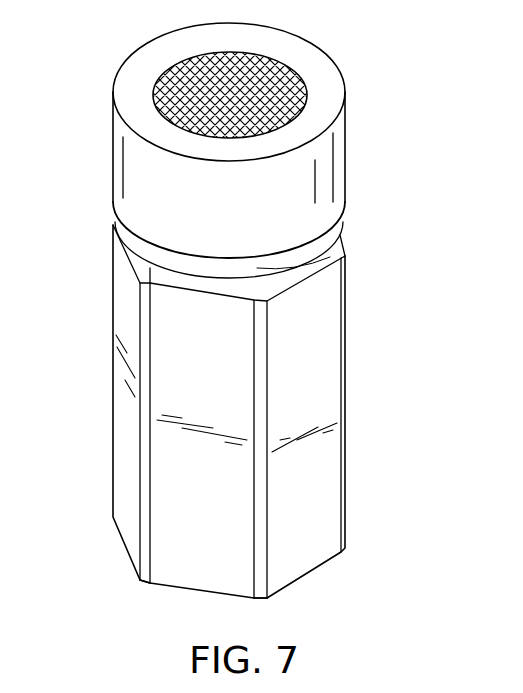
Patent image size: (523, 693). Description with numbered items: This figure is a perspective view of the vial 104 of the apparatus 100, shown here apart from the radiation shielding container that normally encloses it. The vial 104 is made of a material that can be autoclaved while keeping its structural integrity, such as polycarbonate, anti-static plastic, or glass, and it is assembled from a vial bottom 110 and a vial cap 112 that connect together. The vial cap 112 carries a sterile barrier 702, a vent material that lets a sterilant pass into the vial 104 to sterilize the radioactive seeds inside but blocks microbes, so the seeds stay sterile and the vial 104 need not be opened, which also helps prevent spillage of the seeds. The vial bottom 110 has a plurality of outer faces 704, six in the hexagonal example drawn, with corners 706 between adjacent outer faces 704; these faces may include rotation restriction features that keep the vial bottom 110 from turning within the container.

The apparatus 100 is at (120, 43).
The vial 104 is at (93, 201).
The vial bottom 110 is at (347, 332).
The vial cap 112 is at (290, 192).
The sterile barrier 702 is at (251, 72).
The outer faces 704 is at (126, 440).
The corners 706 is at (145, 567).